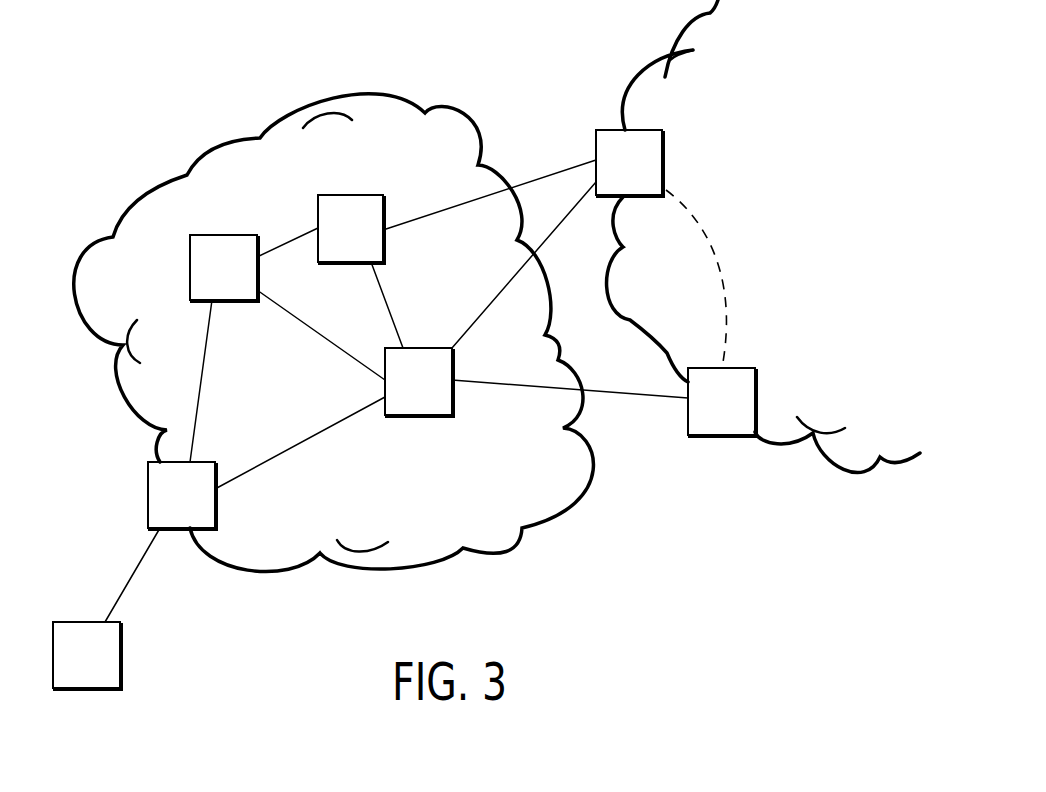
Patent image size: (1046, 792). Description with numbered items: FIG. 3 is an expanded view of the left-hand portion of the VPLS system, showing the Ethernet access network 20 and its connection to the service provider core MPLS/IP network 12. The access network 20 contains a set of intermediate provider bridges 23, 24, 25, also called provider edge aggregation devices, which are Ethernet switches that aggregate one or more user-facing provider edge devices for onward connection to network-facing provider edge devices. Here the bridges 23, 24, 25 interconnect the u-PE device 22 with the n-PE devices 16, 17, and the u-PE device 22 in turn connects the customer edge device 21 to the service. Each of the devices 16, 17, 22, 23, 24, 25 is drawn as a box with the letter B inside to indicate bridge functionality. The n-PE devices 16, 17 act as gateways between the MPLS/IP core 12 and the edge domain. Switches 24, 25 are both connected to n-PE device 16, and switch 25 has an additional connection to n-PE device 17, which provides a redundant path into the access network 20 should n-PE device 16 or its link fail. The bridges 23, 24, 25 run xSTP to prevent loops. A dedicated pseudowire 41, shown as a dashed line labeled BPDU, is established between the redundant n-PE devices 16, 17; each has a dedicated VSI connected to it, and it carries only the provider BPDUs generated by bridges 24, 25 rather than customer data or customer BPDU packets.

The MPLS/IP core network 12 is at (682, 25).
The Ethernet access network 20 is at (233, 140).
The n-PE device 16 is at (595, 143).
The n-PE device 17 is at (688, 422).
The customer edge device 21 is at (120, 655).
The u-PE device 22 is at (148, 500).
The intermediate provider bridge 23 is at (223, 235).
The intermediate provider bridge 24 is at (343, 195).
The intermediate provider bridge 25 is at (418, 415).
The pseudowire 41 is at (728, 280).